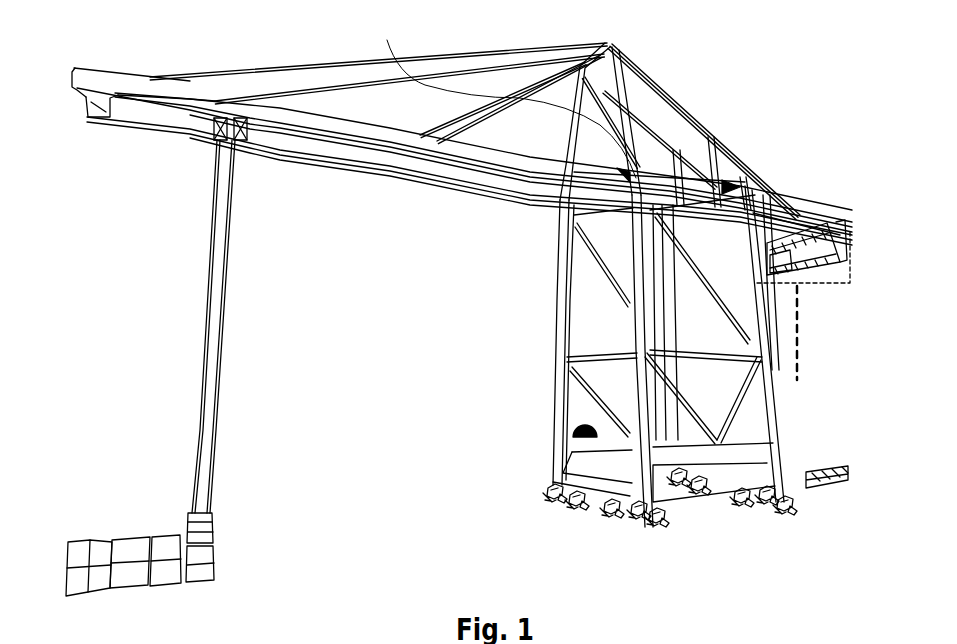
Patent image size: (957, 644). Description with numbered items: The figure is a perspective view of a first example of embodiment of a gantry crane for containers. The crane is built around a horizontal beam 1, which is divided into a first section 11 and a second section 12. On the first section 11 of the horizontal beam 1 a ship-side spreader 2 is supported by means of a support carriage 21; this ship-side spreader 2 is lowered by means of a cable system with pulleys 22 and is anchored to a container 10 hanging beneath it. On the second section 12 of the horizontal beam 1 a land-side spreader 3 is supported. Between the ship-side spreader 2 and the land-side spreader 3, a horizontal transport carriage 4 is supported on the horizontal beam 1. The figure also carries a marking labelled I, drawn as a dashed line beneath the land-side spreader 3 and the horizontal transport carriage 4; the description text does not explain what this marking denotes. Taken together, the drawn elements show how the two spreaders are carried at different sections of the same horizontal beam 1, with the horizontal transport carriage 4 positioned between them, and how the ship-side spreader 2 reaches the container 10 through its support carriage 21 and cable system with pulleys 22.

The horizontal beam 1 is at (495, 212).
The ship-side spreader 2 is at (228, 521).
The land-side spreader 3 is at (822, 215).
The horizontal transport carriage 4 is at (835, 285).
The container 10 is at (230, 560).
The first section 11 is at (118, 66).
The second section 12 is at (652, 162).
The support carriage 21 is at (255, 154).
The cable system with pulleys 22 is at (236, 360).
The section indication I is at (799, 355).